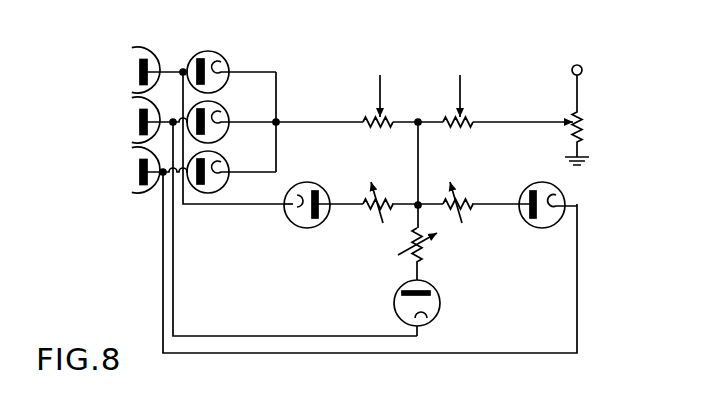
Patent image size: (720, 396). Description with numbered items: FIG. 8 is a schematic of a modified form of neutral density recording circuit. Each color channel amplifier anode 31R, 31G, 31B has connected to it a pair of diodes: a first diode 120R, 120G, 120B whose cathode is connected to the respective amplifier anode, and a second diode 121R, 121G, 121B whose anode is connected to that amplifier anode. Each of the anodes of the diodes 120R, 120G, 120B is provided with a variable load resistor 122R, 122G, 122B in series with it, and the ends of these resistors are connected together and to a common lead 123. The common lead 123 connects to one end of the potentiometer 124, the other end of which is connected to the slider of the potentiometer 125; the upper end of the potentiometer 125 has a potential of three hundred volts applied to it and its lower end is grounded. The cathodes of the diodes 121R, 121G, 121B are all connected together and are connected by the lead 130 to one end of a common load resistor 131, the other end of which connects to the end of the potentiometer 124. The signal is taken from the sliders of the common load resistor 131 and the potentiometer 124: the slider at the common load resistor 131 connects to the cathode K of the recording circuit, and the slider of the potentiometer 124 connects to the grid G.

The color channel amplifier anode 31R is at (135, 72).
The color channel amplifier anode 31G is at (135, 122).
The color channel amplifier anode 31B is at (135, 173).
The diode 121R is at (217, 58).
The diode 121G is at (217, 108).
The diode 121B is at (217, 158).
The lead 130 is at (294, 118).
The common load resistor 131 is at (370, 115).
The cathode connection K is at (380, 88).
The grid connection G is at (460, 88).
The potentiometer 124 is at (474, 118).
The potentiometer 125 is at (583, 114).
The common lead 123 is at (422, 175).
The diode 120R is at (306, 188).
The diode 120G is at (558, 176).
The diode 120B is at (430, 300).
The variable load resistor 122R is at (373, 214).
The variable load resistor 122G is at (469, 208).
The variable load resistor 122B is at (426, 252).